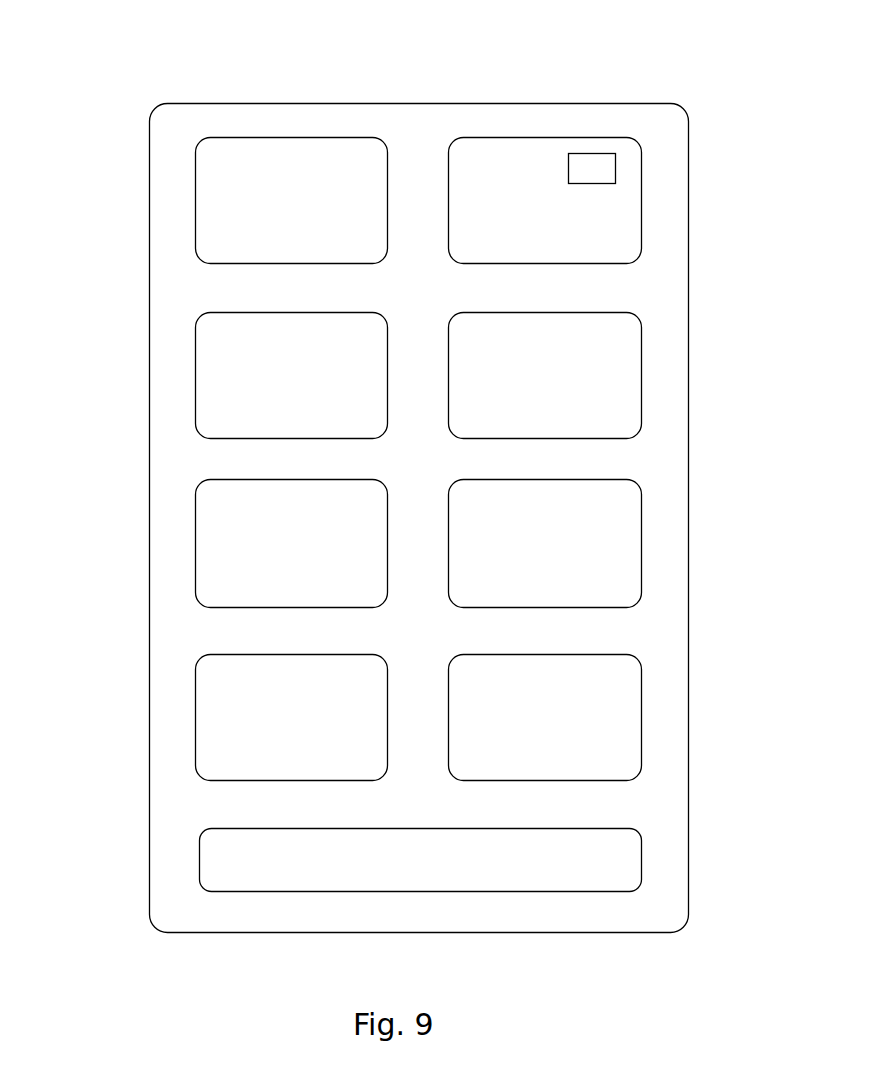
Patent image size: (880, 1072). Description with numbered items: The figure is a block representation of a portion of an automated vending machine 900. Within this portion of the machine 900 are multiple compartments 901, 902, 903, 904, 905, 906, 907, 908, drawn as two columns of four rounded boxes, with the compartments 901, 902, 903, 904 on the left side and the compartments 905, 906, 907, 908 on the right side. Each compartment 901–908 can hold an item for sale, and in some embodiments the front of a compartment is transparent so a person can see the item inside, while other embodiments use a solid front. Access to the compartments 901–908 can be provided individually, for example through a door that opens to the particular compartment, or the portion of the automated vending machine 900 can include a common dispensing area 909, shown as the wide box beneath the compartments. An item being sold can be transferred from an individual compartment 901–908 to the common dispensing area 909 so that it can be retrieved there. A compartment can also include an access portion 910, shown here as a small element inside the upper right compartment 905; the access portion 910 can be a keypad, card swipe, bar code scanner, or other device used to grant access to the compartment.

The portion of an automated vending machine 900 is at (419, 493).
The compartment 901 is at (183, 202).
The compartment 902 is at (180, 376).
The compartment 903 is at (183, 540).
The compartment 904 is at (183, 718).
The compartment 905 is at (653, 218).
The compartment 906 is at (653, 382).
The compartment 907 is at (653, 550).
The compartment 908 is at (653, 718).
The common dispensing area 909 is at (421, 860).
The access portion 910 is at (592, 167).